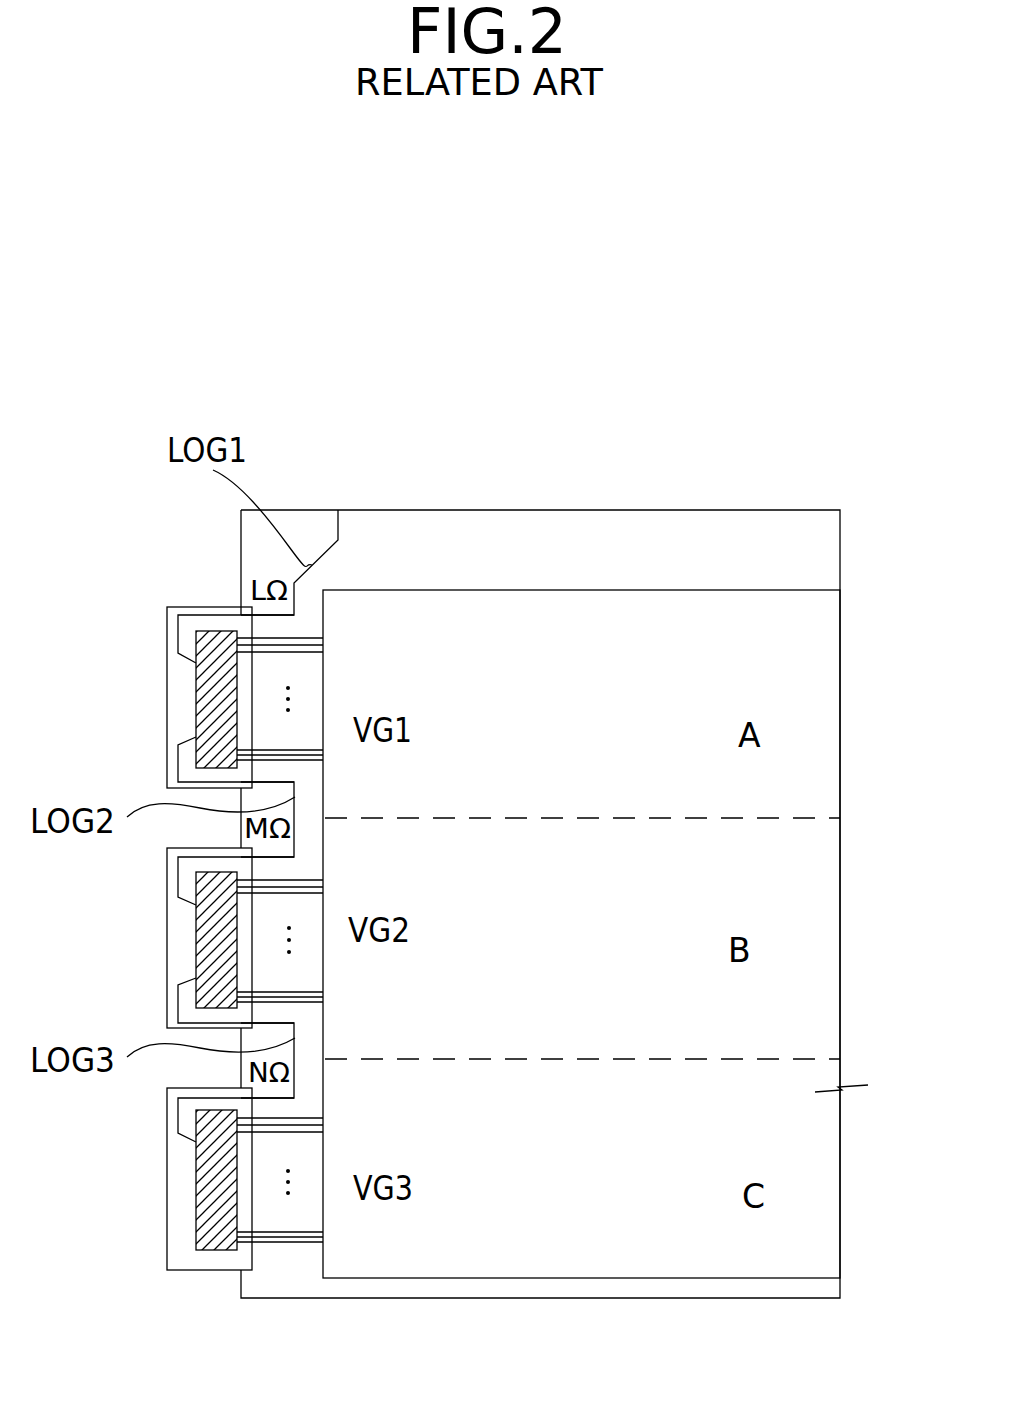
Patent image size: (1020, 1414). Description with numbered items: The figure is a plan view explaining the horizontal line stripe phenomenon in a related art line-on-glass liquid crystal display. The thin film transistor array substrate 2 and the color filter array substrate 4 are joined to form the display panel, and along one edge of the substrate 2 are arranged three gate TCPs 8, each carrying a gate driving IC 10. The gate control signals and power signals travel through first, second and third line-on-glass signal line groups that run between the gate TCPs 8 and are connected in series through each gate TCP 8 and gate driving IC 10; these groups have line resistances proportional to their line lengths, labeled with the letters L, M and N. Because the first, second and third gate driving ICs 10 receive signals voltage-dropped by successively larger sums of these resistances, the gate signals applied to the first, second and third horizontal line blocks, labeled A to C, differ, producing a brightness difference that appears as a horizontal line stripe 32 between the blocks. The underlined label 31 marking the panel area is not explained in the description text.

The thin film transistor array substrate 2 is at (828, 568).
The color filter array substrate 4 is at (823, 635).
The gate TCP 8 is at (170, 663).
The gate driving IC 10 is at (197, 718).
The panel area 31 is at (608, 900).
The horizontal line stripe 32 is at (793, 818).